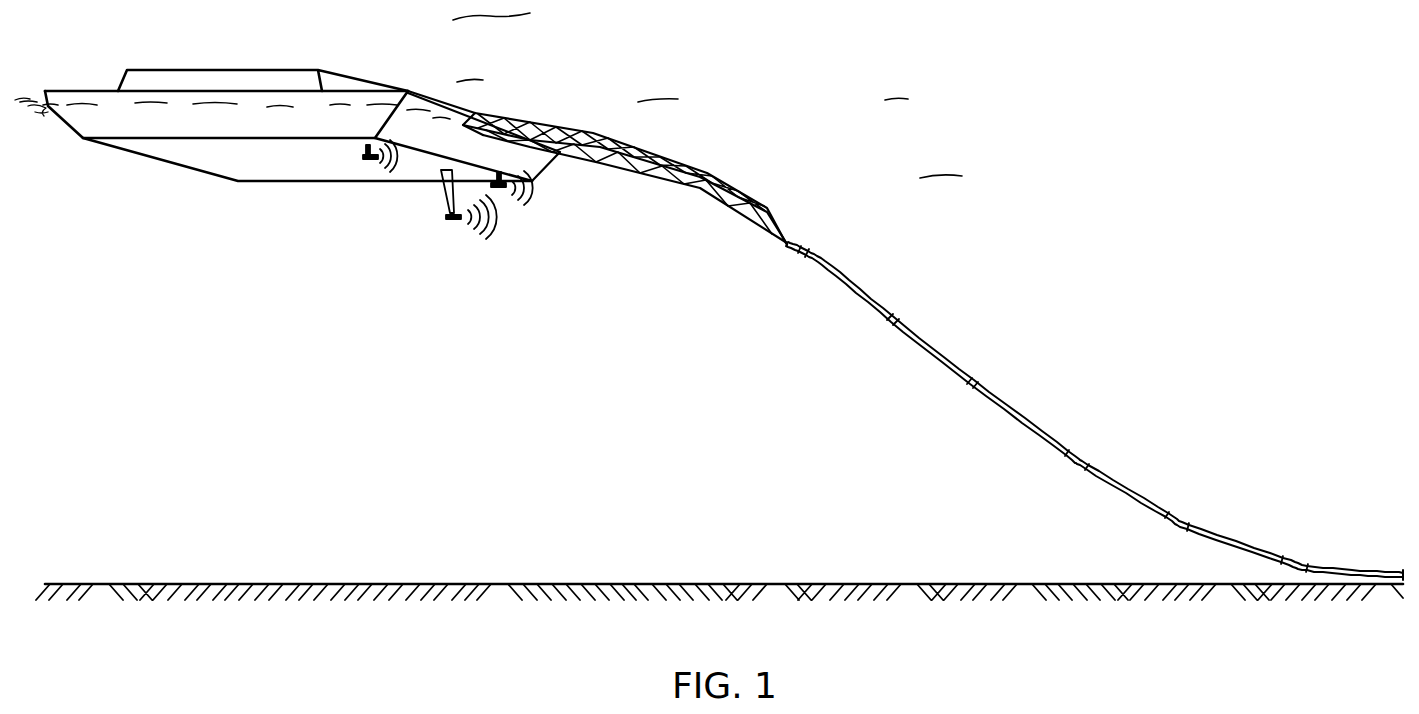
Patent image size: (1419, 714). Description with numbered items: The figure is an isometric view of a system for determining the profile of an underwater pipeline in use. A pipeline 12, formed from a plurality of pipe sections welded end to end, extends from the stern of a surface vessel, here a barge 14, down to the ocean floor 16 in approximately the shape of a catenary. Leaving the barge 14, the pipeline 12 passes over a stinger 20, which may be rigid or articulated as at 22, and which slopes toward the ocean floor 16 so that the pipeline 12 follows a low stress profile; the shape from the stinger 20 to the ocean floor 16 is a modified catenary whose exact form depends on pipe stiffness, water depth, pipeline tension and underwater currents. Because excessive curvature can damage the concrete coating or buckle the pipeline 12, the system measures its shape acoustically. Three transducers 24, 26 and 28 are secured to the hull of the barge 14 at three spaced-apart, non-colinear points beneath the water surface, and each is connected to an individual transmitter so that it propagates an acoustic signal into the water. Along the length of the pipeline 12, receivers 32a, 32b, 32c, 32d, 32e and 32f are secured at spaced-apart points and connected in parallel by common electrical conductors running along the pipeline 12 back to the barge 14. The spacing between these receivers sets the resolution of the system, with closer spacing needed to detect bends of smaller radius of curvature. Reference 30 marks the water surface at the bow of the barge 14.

The pipeline 12 is at (1030, 424).
The barge 14 is at (316, 173).
The ocean floor 16 is at (802, 583).
The stinger 20 is at (683, 165).
The articulated portion of stinger 22 is at (594, 155).
The transducer 24 is at (372, 162).
The transducer 26 is at (453, 222).
The transducer 28 is at (504, 191).
The water surface / bow wave 30 is at (50, 107).
The receiver 32a is at (812, 263).
The receiver 32b is at (900, 333).
The receiver 32c is at (987, 402).
The receiver 32d is at (1083, 473).
The receiver 32e is at (1185, 528).
The receiver 32f is at (1307, 557).